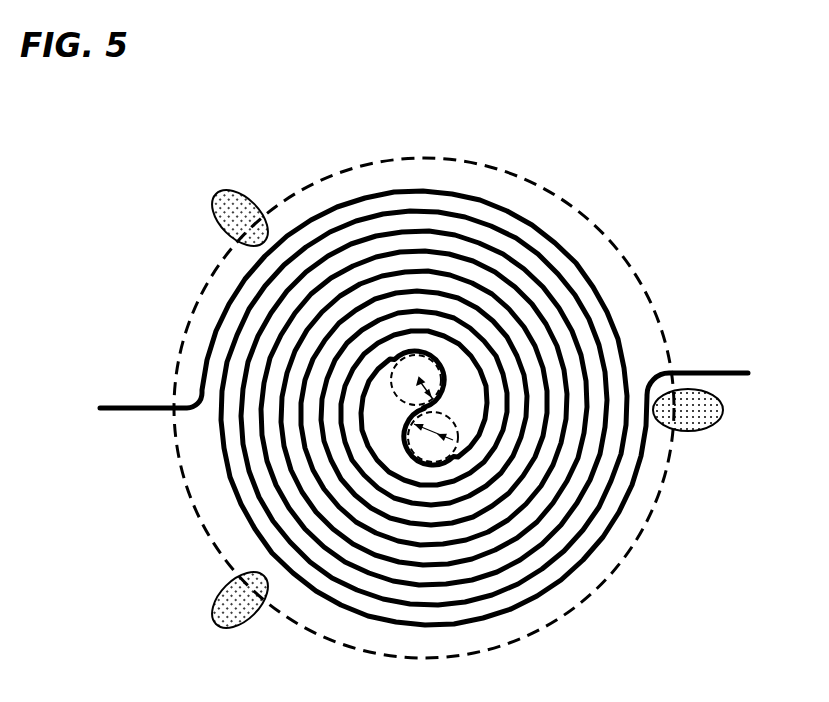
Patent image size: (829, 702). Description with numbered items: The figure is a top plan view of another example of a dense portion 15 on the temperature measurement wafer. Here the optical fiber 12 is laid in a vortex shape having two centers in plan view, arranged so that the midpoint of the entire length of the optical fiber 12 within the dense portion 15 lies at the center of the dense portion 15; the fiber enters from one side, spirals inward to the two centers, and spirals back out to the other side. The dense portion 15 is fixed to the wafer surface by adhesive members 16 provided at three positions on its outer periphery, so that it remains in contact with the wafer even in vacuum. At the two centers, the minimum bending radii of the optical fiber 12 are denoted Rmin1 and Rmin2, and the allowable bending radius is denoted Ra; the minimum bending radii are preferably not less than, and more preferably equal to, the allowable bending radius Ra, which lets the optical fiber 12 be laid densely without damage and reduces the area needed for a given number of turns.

The optical fiber 12 is at (223, 325).
The dense portion 15 is at (565, 195).
The adhesive members 16 is at (213, 204).
The allowable bending radius Ra is at (420, 379).
The minimum bending radius Rmin1 is at (432, 398).
The minimum bending radius Rmin2 is at (413, 426).